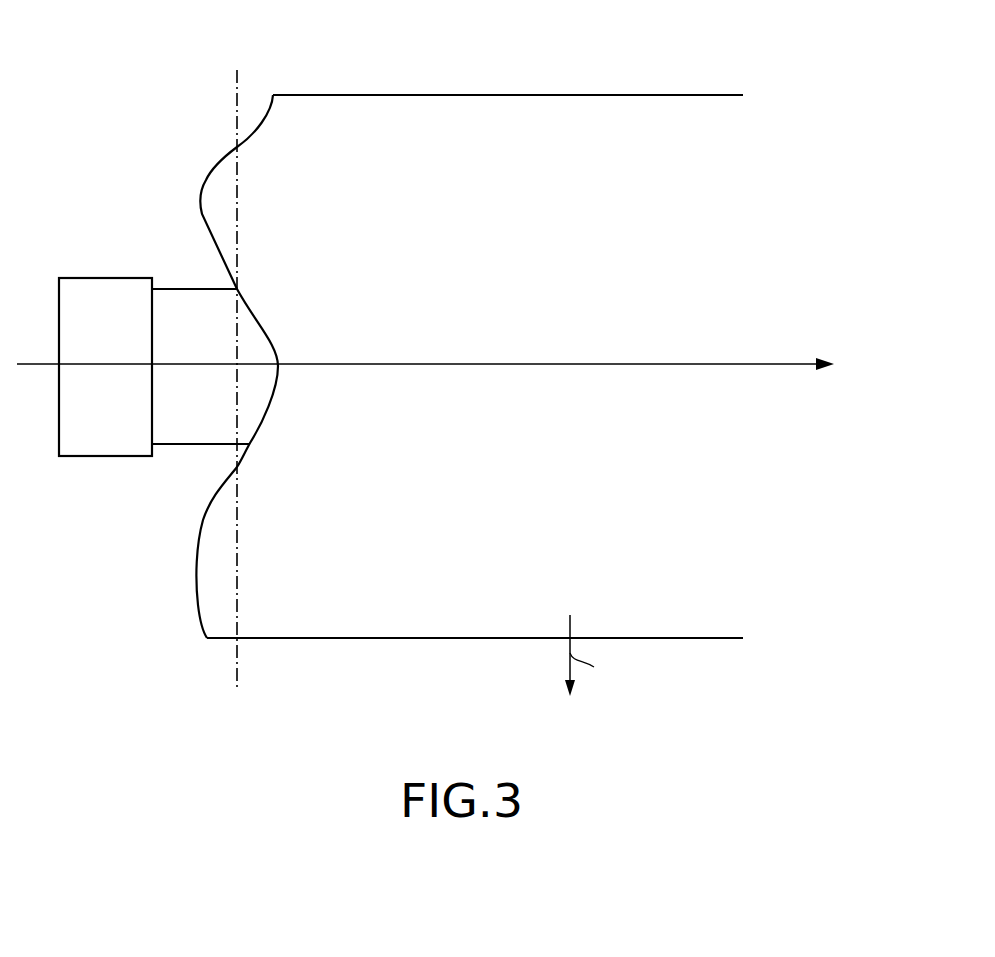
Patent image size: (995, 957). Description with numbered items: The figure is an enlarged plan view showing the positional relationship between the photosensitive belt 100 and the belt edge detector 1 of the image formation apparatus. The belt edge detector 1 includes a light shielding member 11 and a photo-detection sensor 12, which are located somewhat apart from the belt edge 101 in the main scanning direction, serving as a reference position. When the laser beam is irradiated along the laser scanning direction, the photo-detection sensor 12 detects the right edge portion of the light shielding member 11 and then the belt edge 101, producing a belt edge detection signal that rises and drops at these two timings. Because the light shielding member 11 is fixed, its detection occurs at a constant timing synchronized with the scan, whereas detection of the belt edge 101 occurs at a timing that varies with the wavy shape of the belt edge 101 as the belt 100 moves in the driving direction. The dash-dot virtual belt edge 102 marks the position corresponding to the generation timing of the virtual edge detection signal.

The belt edge detector 1 is at (130, 621).
The light shielding member 11 is at (59, 343).
The photo-detection sensor 12 is at (183, 288).
The photosensitive belt 100 is at (512, 103).
The belt edge 101 is at (208, 178).
The virtual belt edge 102 is at (278, 57).